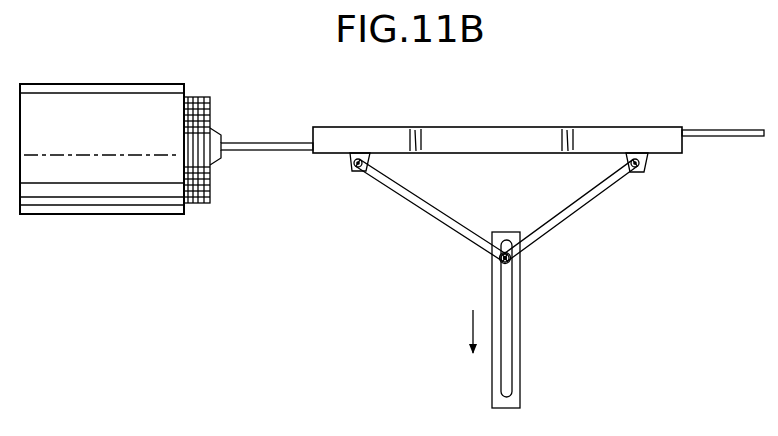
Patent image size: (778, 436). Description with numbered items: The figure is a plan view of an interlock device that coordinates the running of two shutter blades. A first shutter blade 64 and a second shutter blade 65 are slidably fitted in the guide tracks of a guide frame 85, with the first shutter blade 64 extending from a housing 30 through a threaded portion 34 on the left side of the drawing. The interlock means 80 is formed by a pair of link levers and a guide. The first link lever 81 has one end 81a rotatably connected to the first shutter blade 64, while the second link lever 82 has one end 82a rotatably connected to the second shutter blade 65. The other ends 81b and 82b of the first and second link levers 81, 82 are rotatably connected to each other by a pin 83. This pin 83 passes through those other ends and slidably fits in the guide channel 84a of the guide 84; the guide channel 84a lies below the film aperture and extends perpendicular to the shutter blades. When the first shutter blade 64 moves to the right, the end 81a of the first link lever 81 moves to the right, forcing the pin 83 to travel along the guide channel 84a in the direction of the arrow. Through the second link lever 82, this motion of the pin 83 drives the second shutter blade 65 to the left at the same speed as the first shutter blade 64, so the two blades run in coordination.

The motor housing 30 is at (125, 82).
The threaded coupling 34 is at (200, 98).
The first shutter blade 64 is at (283, 143).
The guide frame 85 is at (533, 127).
The second shutter blade 65 is at (728, 130).
The interlock means 80 is at (500, 220).
The first link lever 81 is at (431, 211).
The one end of the first link lever 81a is at (355, 171).
The other end of the first link lever 81b is at (495, 259).
The second link lever 82 is at (582, 203).
The one end of the second link lever 82a is at (640, 173).
The other end of the second link lever 82b is at (515, 255).
The pin 83 is at (516, 267).
The guide 84 is at (527, 320).
The guide channel 84a is at (507, 323).